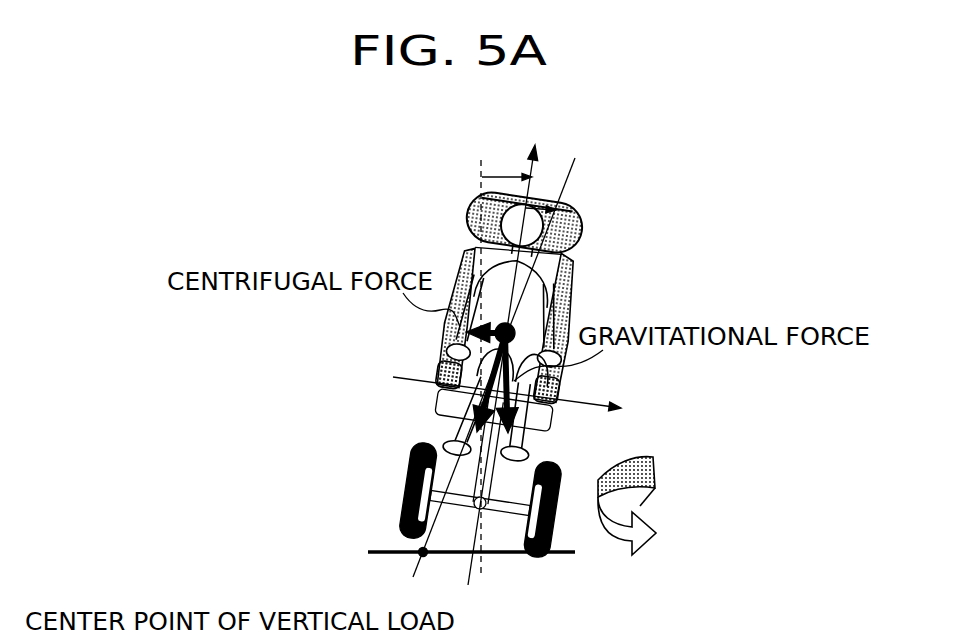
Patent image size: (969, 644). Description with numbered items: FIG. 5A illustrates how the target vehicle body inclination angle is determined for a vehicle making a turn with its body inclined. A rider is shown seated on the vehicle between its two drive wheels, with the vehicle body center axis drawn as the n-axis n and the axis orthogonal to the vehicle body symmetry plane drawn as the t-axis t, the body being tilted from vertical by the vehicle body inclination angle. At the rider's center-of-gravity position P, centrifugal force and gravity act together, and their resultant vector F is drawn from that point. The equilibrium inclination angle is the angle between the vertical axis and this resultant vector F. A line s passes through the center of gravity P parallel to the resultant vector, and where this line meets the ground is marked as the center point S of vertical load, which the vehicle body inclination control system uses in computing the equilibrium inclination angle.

The n-axis n is at (505, 352).
The t-axis t is at (514, 399).
The line connecting center point of vertical load and center of gravity s is at (575, 160).
The center-of-gravity position P is at (512, 322).
The center point of vertical load S is at (425, 553).
The resultant vector F is at (445, 352).